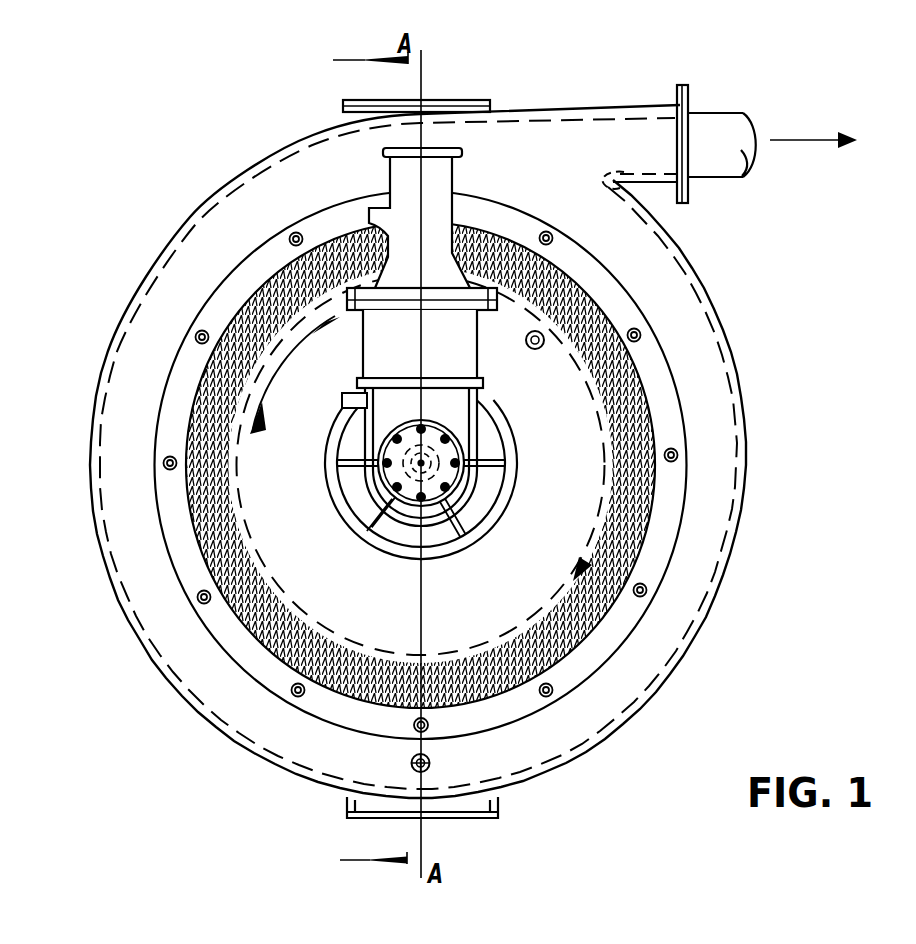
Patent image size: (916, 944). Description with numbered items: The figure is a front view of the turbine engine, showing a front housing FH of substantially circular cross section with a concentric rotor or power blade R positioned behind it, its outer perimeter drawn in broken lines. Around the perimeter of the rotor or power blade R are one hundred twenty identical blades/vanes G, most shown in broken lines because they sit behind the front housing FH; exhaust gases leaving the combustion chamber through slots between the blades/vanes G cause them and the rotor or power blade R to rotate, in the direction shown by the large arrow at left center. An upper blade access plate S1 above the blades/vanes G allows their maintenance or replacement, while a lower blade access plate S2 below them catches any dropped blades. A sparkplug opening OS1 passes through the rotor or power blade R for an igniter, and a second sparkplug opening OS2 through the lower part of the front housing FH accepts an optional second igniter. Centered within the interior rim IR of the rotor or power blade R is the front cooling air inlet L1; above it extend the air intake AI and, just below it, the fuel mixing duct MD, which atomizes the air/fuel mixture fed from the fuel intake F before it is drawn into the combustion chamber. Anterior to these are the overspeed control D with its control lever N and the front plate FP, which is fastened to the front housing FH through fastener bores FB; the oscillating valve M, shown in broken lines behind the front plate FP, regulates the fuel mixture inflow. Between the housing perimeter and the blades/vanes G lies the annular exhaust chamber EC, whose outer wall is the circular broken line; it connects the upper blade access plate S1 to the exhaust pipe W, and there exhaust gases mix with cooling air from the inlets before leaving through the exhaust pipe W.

The air intake AI is at (400, 197).
The fuel mixing duct MD is at (375, 333).
The exhaust chamber EC is at (100, 367).
The upper blade access plate S1 is at (477, 100).
The lower blade access plate S2 is at (376, 836).
The fuel intake F is at (431, 404).
The exhaust pipe W is at (713, 138).
The sparkplug opening OS1 is at (545, 337).
The second sparkplug opening OS2 is at (428, 767).
The blades/vanes G is at (640, 394).
The fastener bores FB is at (678, 455).
The front housing FH is at (737, 593).
The rotor or power blade R is at (657, 620).
The overspeed control D is at (478, 388).
The oscillating valve M is at (440, 456).
The front cooling air inlet L1 is at (483, 497).
The interior rim IR is at (480, 533).
The front plate FP is at (397, 486).
The control lever N is at (345, 410).